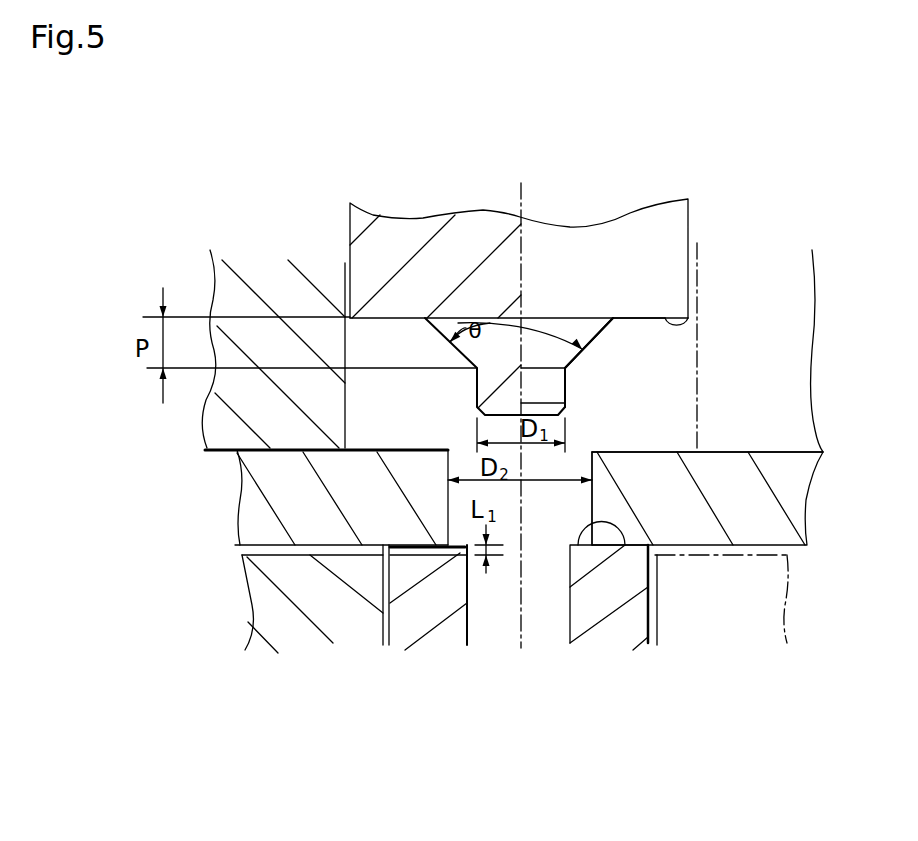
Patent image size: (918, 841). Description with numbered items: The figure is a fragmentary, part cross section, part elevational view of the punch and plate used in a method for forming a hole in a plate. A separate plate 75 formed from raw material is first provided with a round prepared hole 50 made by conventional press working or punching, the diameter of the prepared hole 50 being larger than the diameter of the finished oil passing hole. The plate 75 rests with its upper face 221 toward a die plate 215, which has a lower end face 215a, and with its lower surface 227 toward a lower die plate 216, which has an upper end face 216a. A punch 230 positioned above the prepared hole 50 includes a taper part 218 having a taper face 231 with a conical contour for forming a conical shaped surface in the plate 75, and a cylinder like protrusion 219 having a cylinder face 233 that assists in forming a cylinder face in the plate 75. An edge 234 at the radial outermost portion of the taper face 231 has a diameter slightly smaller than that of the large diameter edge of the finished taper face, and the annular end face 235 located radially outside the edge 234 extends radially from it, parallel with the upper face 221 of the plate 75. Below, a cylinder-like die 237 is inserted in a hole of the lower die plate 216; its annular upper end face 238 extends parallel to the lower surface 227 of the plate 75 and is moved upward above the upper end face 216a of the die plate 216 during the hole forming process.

The die plate 215 is at (272, 258).
The lower end face of the die plate 215a is at (282, 452).
The lower die plate 216 is at (288, 640).
The upper end face of the die plate 216a is at (270, 546).
The punch 230 is at (587, 205).
The taper part 218 is at (565, 330).
The annular end face 235 is at (690, 314).
The edge 234 is at (612, 327).
The taper face 231 is at (592, 340).
The cylinder face 233 is at (565, 383).
The cylinder like protrusion 219 is at (542, 392).
The upper face of the separate plate 221 is at (667, 452).
The separate plate 75 is at (757, 510).
The prepared hole 50 is at (590, 507).
The annular upper end face 238 is at (625, 546).
The lower surface of the separate plate 227 is at (753, 555).
The cylinder-like die 237 is at (607, 627).